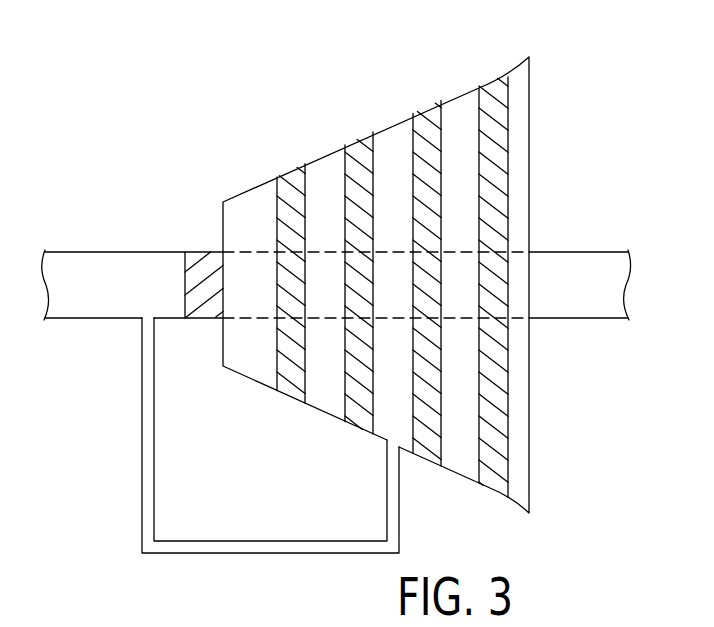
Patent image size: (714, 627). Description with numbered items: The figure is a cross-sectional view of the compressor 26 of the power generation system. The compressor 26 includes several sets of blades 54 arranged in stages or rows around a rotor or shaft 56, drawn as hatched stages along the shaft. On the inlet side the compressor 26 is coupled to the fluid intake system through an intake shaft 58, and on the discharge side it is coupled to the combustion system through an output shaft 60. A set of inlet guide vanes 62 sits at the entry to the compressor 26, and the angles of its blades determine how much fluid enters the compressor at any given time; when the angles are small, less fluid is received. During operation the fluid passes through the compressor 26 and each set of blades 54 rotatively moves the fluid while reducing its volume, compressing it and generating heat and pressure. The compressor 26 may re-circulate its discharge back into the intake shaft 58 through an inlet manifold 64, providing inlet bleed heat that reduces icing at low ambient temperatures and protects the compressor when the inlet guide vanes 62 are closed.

The compressor 26 is at (176, 51).
The blades 54 is at (296, 168).
The rotor or shaft 56 is at (250, 251).
The intake shaft 58 is at (133, 251).
The output shaft 60 is at (578, 251).
The inlet guide vanes 62 is at (196, 319).
The inlet manifold 64 is at (142, 428).